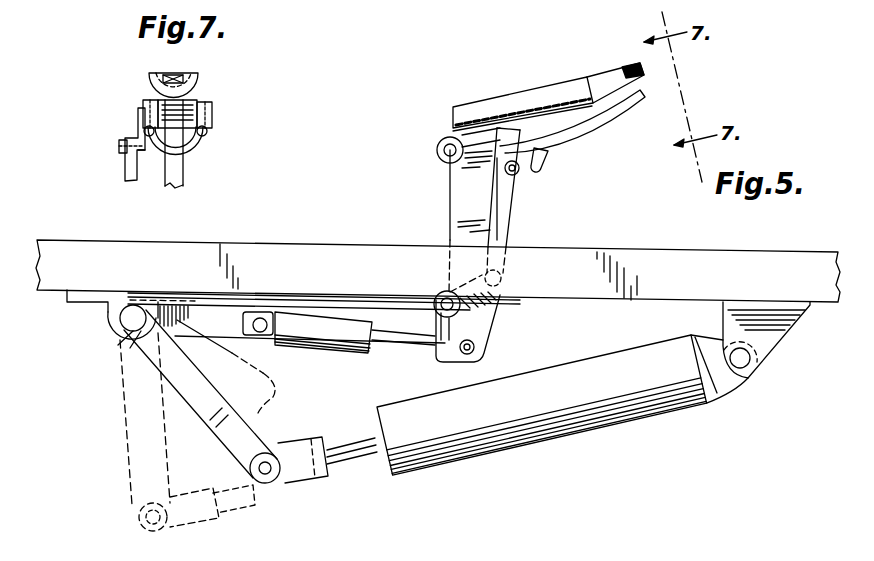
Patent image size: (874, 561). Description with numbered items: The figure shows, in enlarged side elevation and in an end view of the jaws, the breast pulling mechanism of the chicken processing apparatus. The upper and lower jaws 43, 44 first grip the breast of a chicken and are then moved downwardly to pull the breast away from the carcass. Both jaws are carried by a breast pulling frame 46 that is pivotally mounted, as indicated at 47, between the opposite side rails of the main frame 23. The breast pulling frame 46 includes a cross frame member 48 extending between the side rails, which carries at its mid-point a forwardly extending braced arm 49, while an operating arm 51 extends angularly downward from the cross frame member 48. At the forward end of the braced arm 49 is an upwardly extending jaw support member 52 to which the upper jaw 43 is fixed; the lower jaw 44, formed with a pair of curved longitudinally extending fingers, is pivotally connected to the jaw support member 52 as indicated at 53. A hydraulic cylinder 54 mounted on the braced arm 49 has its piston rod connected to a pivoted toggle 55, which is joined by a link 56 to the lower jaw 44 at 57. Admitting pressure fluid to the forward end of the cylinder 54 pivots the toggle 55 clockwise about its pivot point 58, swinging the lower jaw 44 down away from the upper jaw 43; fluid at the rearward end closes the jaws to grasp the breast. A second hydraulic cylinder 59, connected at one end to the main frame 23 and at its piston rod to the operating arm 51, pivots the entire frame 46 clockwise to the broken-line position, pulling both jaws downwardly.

In FIG. 5, the main frame 23 is at (338, 242).
In FIG. 7, the upper jaw 43 is at (148, 77).
In FIG. 5, the upper jaw 43 is at (540, 86).
In FIG. 7, the lower jaw 44 is at (206, 130).
In FIG. 5, the lower jaw 44 is at (597, 128).
In FIG. 5, the breast pulling frame 46 is at (233, 302).
In FIG. 5, the pivotal mounting 47 is at (119, 318).
In FIG. 5, the cross frame member 48 is at (128, 328).
In FIG. 5, the braced arm 49 is at (228, 328).
In FIG. 5, the operating arm 51 is at (207, 427).
In FIG. 7, the jaw support member 52 is at (184, 170).
In FIG. 5, the jaw support member 52 is at (455, 182).
In FIG. 7, the pivotal connection 53 is at (212, 113).
In FIG. 5, the pivotal connection 53 is at (437, 148).
In FIG. 5, the hydraulic cylinder 54 is at (330, 345).
In FIG. 5, the pivoted toggle 55 is at (467, 325).
In FIG. 7, the link 56 is at (125, 168).
In FIG. 5, the link 56 is at (507, 240).
In FIG. 7, the link connection to lower jaw 57 is at (120, 148).
In FIG. 5, the link connection to lower jaw 57 is at (519, 171).
In FIG. 5, the pivot point 58 is at (443, 297).
In FIG. 5, the hydraulic cylinder 59 is at (548, 440).